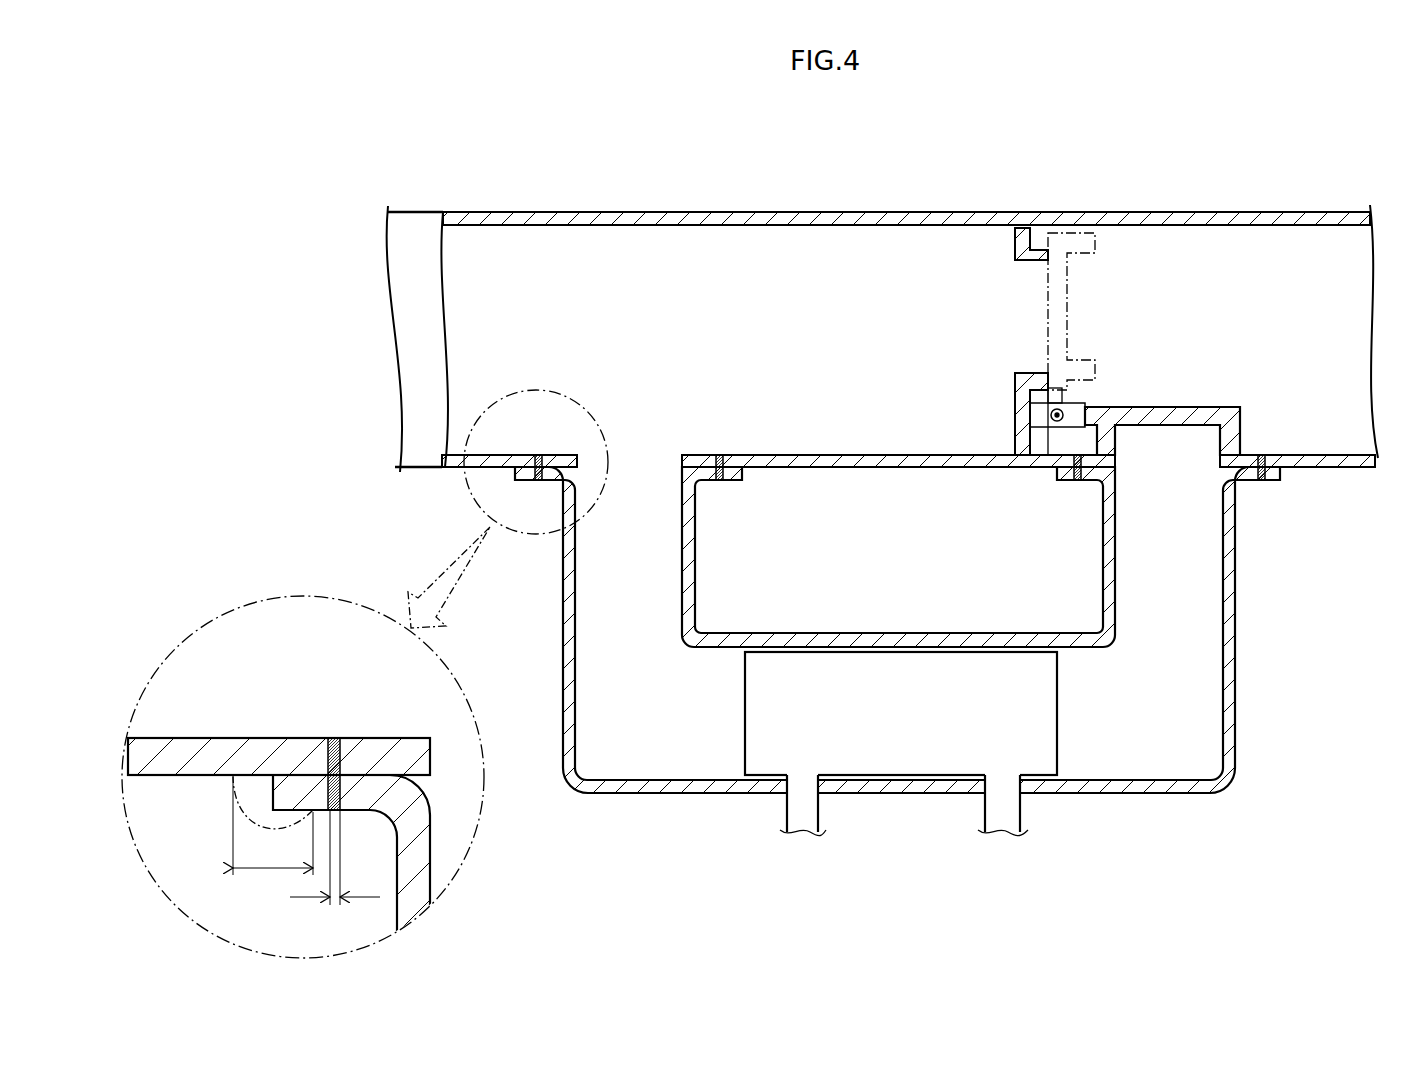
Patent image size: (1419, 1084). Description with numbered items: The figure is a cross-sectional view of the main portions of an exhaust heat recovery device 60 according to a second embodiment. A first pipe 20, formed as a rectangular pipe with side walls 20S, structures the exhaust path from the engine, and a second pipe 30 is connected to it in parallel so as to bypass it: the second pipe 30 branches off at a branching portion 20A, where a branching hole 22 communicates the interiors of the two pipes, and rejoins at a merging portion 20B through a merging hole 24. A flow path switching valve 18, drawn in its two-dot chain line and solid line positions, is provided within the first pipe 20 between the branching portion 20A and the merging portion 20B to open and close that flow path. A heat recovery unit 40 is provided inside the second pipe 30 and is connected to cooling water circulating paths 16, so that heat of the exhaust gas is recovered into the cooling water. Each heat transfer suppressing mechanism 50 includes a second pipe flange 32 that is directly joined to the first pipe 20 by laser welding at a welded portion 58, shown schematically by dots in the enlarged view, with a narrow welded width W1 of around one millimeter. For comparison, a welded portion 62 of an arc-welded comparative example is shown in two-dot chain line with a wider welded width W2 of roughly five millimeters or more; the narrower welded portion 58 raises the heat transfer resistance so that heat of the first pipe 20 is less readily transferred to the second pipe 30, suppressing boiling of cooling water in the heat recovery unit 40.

The cooling water circulating path 16 is at (820, 815).
The flow path switching valve 18 is at (1045, 300).
The first pipe 20 is at (950, 212).
The branching portion 20A is at (558, 290).
The merging portion 20B is at (1225, 293).
The side wall 20S is at (410, 337).
The branching hole 22 is at (680, 455).
The merging hole 24 is at (1218, 460).
The second pipe 30 is at (698, 798).
The second pipe flange 32 is at (520, 479).
The heat recovery unit 40 is at (1059, 712).
The heat transfer suppressing mechanism 50 is at (540, 492).
The welded portion 58 is at (343, 742).
The exhaust heat recovery device 60 is at (1158, 167).
The welded portion 62 is at (252, 826).
The welded width W1 is at (332, 899).
The welded width W2 is at (266, 870).